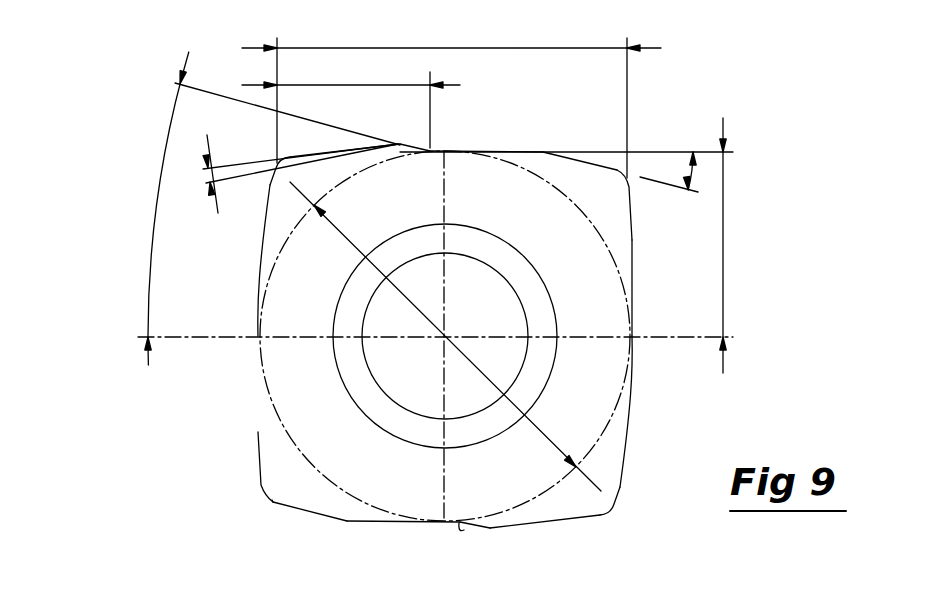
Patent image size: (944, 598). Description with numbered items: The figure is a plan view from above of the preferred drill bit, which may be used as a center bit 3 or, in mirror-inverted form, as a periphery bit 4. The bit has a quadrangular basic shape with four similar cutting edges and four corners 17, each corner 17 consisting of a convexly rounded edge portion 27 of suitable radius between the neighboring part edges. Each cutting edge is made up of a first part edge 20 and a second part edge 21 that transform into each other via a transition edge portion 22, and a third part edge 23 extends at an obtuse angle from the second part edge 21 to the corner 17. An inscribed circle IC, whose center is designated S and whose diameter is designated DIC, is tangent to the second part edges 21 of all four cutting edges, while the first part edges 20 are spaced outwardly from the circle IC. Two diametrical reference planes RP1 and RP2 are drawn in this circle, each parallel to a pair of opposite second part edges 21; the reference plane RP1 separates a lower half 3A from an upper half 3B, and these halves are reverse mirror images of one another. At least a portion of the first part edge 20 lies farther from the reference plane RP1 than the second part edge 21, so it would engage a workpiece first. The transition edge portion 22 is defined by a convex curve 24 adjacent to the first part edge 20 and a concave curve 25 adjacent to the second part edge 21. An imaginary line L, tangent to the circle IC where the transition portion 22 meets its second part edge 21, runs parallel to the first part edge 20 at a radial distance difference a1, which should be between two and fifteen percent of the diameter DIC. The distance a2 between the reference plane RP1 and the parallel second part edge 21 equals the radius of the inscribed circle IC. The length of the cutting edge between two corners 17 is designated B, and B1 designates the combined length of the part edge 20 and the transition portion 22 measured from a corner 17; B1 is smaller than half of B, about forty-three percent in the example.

The center bit 3 is at (388, 336).
The periphery bit 4 is at (272, 431).
The lower half 3A is at (642, 437).
The upper half 3B is at (650, 245).
The corner 17 is at (279, 167).
The first part edge 20 is at (322, 153).
The second part edge 21 is at (498, 151).
The transition edge portion 22 is at (403, 145).
The third part edge 23 is at (590, 161).
The convex curve 24 is at (513, 532).
The concave curve 25 is at (459, 523).
The convexly rounded edge portion 27 is at (273, 497).
The inscribed circle IC is at (277, 260).
The diameter of the inscribed circle DIC is at (548, 436).
The center of the inscribed circle S is at (447, 335).
The reference plane RP1 is at (590, 338).
The reference plane RP2 is at (446, 194).
The length of the cutting edge B is at (451, 101).
The total length of the part edge and transition portion B1 is at (351, 103).
The radial distance difference a1 is at (300, 174).
The distance between reference plane and second part edge a2 is at (579, 245).
The imaginary line L is at (248, 177).